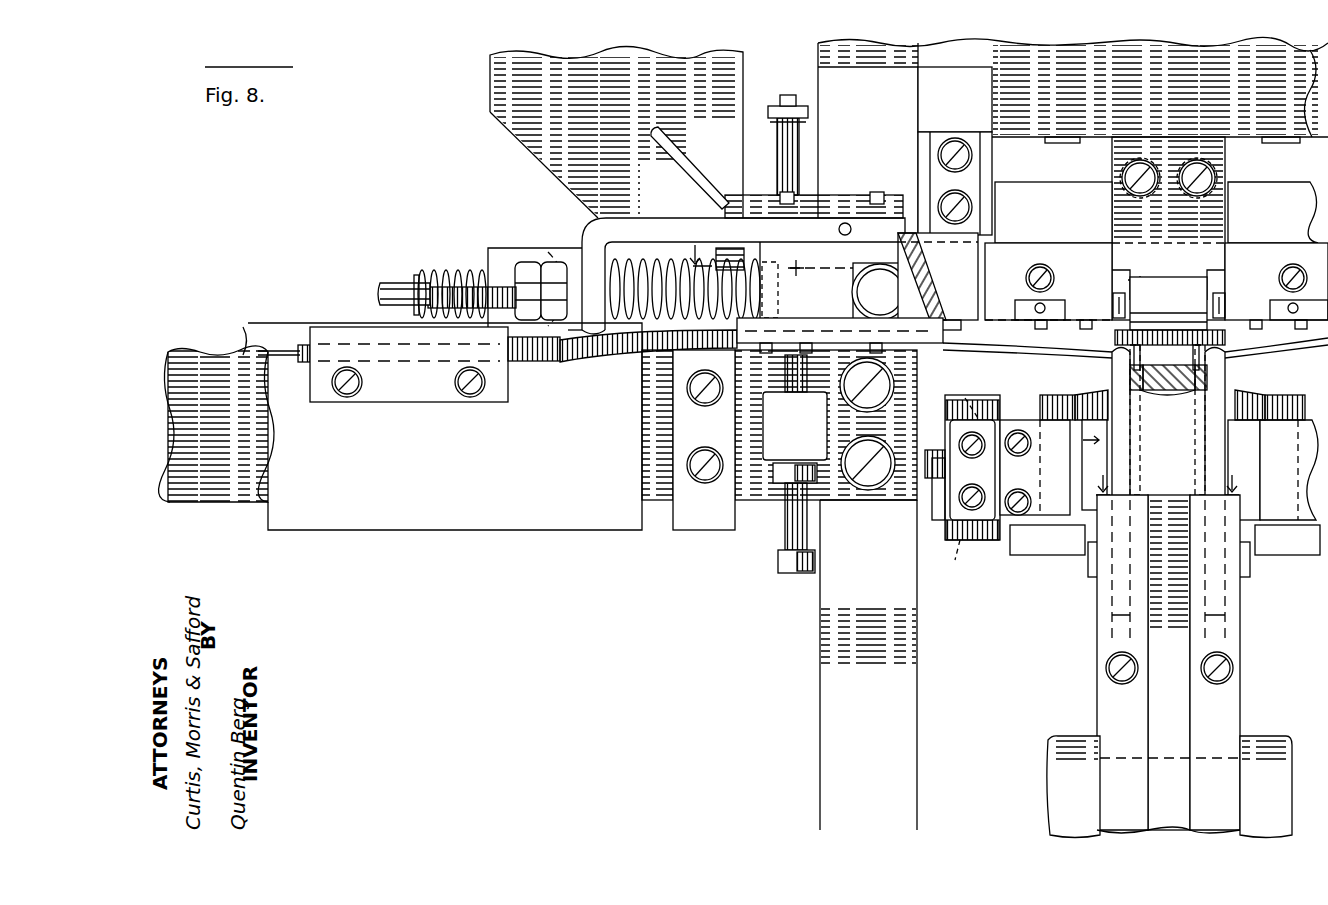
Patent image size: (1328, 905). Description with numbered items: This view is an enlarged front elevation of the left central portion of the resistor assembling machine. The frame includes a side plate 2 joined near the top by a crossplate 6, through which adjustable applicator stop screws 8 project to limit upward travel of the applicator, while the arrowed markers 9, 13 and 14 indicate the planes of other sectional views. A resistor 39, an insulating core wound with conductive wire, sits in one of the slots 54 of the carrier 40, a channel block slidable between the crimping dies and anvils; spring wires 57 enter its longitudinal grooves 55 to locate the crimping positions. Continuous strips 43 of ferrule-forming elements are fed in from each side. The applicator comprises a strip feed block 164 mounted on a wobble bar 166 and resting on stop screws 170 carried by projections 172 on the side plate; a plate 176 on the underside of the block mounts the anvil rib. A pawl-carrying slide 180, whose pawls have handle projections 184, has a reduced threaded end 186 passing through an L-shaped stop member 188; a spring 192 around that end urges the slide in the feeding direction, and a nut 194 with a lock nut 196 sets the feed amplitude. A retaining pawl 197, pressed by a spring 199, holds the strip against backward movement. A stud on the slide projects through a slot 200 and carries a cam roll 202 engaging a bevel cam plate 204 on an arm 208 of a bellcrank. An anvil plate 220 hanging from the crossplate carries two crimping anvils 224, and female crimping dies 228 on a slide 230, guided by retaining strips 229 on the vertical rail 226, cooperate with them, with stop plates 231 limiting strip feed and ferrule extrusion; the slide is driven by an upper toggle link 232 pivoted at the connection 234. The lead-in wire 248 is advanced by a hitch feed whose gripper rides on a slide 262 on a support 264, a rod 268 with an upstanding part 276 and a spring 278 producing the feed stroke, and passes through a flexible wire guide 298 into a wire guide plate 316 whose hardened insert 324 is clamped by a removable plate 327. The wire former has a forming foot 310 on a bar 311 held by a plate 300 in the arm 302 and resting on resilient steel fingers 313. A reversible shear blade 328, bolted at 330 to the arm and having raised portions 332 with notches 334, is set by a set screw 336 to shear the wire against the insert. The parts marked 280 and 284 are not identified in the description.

The left side plate 2 is at (828, 78).
The crossplate 6 is at (1015, 78).
The applicator stop screws 8 is at (1058, 137).
The section line 9 is at (926, 271).
The section line 13 is at (1082, 376).
The sprocket wheel 14 is at (1169, 514).
The resistor 39 is at (1163, 328).
The carrier 40 is at (1025, 318).
The connector strips 43 is at (1112, 303).
The slots 54 is at (1195, 318).
The longitudinal grooves 55 is at (1182, 386).
The spring wires 57 is at (1142, 352).
The strip feed block 164 is at (863, 252).
The wobble bar 166 is at (1070, 195).
The stop screws 170 is at (782, 528).
The projections 172 is at (790, 405).
The plate 176 is at (1055, 318).
The pawl-carrying slide 180 is at (797, 273).
The handle projections 184 is at (1036, 306).
The reduced threaded end 186 is at (667, 282).
The stop member 188 is at (618, 220).
The spring 192 is at (642, 255).
The nut 194 is at (552, 272).
The lock nut 196 is at (524, 272).
The retaining pawl 197 is at (745, 195).
The spring 199 is at (774, 122).
The slot 200 is at (850, 272).
The cam roll 202 is at (852, 292).
The bevel cam plate 204 is at (928, 262).
The arm 208 is at (992, 170).
The anvil plate 220 is at (1172, 160).
The crimping anvils 224 is at (1135, 290).
The vertical rail 226 is at (1158, 520).
The female crimping dies 228 is at (1115, 369).
The retaining strips 229 is at (1110, 637).
The slide 230 is at (1097, 704).
The stop plates 231 is at (1136, 400).
The upper link 232 is at (1060, 742).
The pivot 234 is at (1048, 793).
The lead-in wire 248 is at (267, 325).
The slide 262 is at (428, 510).
The support 264 is at (205, 485).
The rod 268 is at (385, 293).
The upstanding part 276 is at (488, 256).
The spring 278 is at (416, 275).
The housing 280 is at (548, 250).
The block 284 is at (527, 108).
The flexible wire guide 298 is at (303, 364).
The plate 300 is at (1040, 435).
The arm 302 is at (945, 505).
The forming foot 310 is at (1090, 400).
The bar 311 is at (1050, 406).
The steel fingers 313 is at (1040, 545).
The wire guide plate 316 is at (820, 325).
The hardened insert 324 is at (930, 312).
The removable plate 327 is at (852, 379).
The shear blade 328 is at (930, 532).
The bolts 330 is at (972, 470).
The raised portion 332 is at (960, 402).
The notch 334 is at (986, 410).
The set screw 336 is at (930, 460).